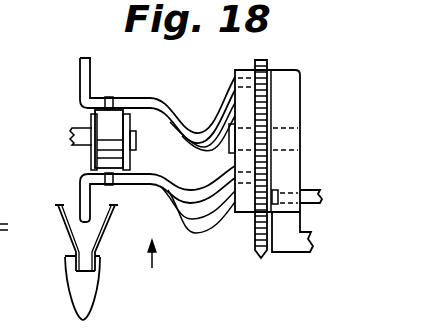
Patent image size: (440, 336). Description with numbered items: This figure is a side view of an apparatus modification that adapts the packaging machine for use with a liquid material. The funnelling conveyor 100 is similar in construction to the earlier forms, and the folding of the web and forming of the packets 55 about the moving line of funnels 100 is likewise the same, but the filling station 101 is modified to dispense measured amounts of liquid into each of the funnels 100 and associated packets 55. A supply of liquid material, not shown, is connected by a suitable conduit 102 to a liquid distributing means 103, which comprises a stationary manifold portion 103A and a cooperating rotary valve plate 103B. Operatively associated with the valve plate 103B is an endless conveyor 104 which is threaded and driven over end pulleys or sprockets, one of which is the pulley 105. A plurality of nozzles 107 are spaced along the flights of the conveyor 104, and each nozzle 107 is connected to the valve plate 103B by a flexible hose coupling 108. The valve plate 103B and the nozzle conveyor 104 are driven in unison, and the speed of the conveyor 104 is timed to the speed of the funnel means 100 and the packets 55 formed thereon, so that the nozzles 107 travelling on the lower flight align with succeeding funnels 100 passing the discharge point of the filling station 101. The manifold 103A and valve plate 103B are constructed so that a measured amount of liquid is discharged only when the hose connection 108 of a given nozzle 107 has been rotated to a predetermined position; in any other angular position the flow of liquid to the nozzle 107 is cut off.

The packet 55 is at (97, 291).
The funnelling conveyor 100 is at (112, 234).
The filling station 101 is at (155, 272).
The conduit 102 is at (309, 192).
The liquid distributing means 103 is at (309, 114).
The stationary manifold portion 103A is at (283, 82).
The rotary valve plate 103B is at (237, 148).
The endless conveyor 104 is at (106, 97).
The end pulley 105 is at (105, 117).
The nozzle 107 is at (80, 76).
The flexible hose coupling 108 is at (170, 103).